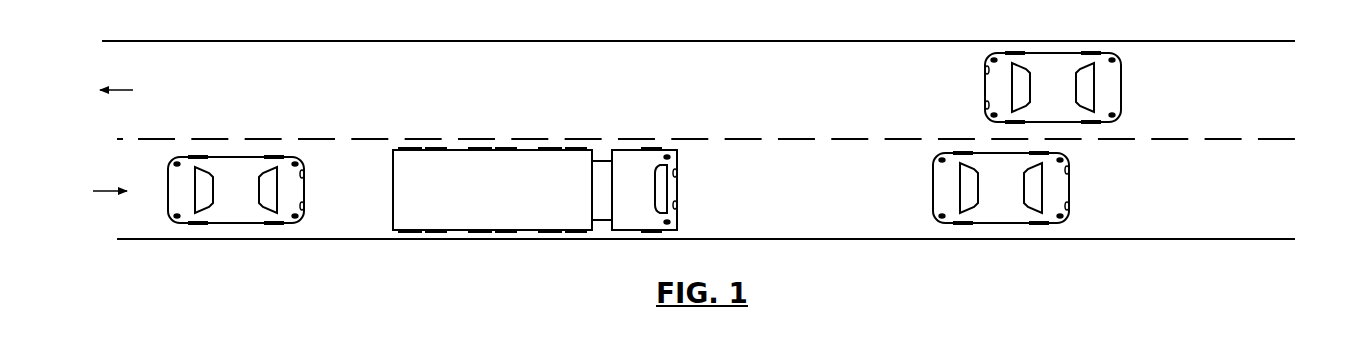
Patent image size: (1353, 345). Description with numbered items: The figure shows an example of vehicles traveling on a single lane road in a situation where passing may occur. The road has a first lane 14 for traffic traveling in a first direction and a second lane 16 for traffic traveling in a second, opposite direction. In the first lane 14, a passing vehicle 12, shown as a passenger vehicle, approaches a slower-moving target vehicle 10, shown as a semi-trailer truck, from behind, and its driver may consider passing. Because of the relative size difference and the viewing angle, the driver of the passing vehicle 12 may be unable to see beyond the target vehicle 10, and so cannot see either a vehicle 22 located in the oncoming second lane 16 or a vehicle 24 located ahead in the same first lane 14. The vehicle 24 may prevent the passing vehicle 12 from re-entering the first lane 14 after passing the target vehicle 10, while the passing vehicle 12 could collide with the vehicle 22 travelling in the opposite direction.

The target vehicle 10 is at (476, 121).
The passing vehicle 12 is at (243, 128).
The first lane 14 is at (817, 203).
The second lane 16 is at (817, 98).
The vehicle 22 is at (1150, 103).
The vehicle 24 is at (1100, 200).